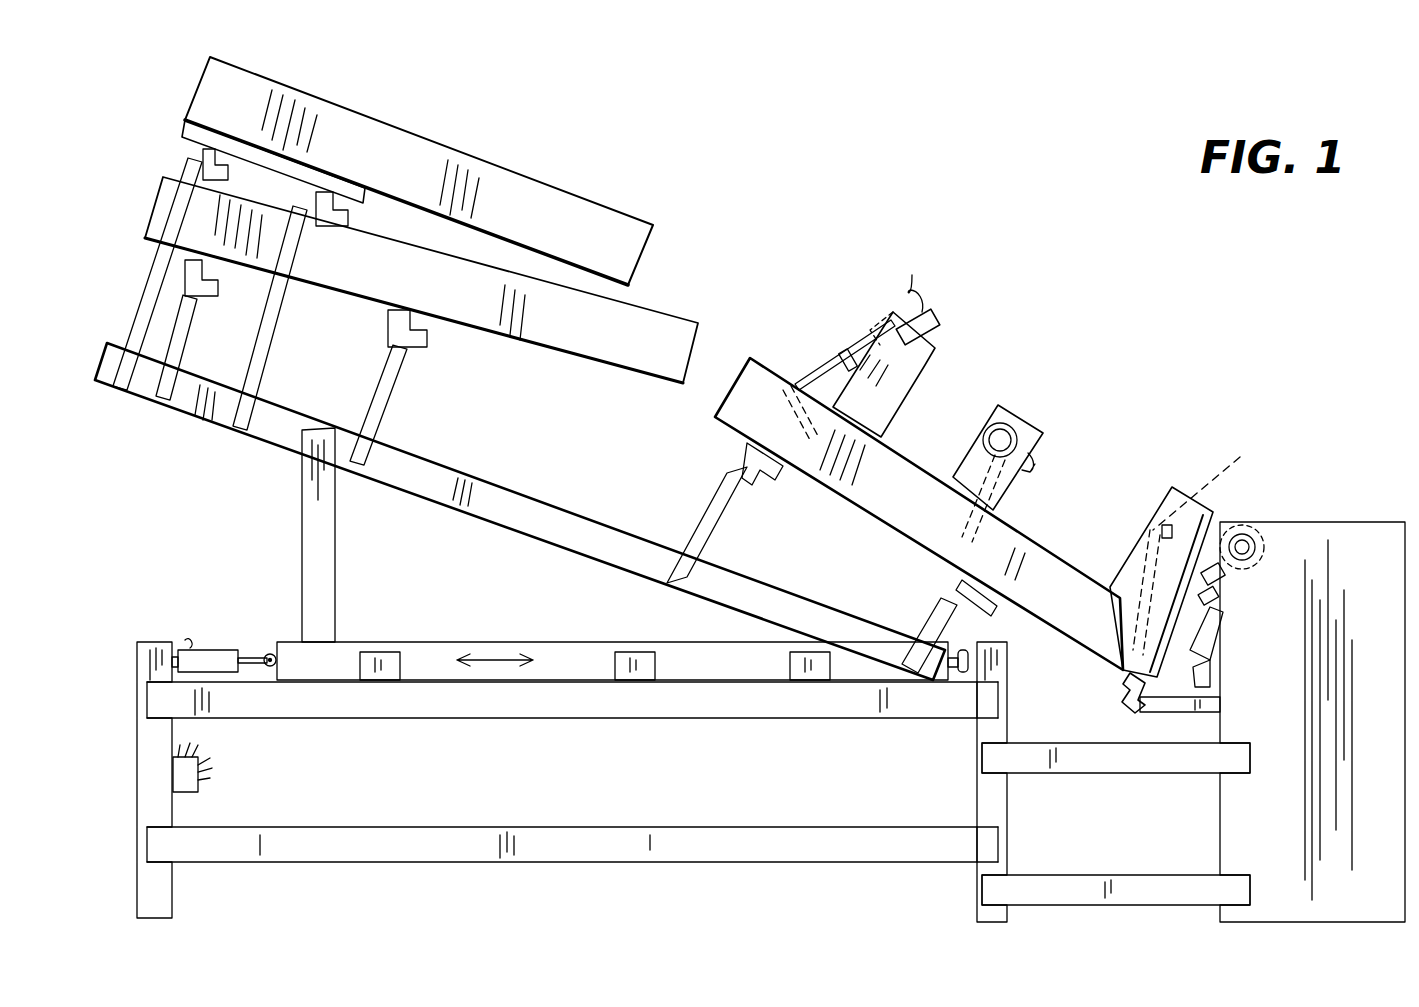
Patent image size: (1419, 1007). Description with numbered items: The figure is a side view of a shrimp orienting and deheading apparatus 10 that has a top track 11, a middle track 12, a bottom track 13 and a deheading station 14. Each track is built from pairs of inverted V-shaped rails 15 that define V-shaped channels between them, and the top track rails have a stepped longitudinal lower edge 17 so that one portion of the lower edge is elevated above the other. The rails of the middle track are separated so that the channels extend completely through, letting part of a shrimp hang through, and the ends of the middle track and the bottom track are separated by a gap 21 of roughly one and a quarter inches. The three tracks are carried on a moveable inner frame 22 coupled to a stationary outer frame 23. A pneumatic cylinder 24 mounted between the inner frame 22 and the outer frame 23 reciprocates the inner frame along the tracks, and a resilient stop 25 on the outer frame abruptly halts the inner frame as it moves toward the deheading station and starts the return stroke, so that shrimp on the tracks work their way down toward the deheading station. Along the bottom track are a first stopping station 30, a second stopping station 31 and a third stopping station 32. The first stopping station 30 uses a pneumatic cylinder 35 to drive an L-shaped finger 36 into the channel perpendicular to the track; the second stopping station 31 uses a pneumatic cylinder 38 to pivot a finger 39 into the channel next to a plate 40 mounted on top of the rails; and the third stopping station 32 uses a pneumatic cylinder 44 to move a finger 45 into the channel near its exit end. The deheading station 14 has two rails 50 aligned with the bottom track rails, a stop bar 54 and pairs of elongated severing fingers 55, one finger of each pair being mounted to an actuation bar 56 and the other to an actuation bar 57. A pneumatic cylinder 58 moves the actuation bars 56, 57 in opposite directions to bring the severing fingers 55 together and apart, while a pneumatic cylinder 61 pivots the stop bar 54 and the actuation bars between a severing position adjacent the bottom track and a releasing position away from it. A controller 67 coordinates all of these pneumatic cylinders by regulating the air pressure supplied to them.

The deheading apparatus 10 is at (895, 172).
The top track 11 is at (533, 182).
The middle track 12 is at (678, 317).
The bottom track 13 is at (762, 367).
The deheading station 14 is at (1252, 632).
The inverted V-shaped rails 15 is at (623, 215).
The longitudinal lower edge 17 is at (417, 205).
The gap 21 is at (694, 413).
The inner frame 22 is at (558, 535).
The outer frame 23 is at (160, 643).
The pneumatic cylinder 24 is at (218, 647).
The resilient stop 25 is at (963, 675).
The first stopping station 30 is at (947, 287).
The second stopping station 31 is at (1032, 388).
The third stopping station 32 is at (1175, 459).
The pneumatic cylinder 35 is at (937, 320).
The L-shaped finger 36 is at (830, 370).
The pneumatic cylinder 38 is at (993, 420).
The finger 39 is at (967, 447).
The plate 40 is at (933, 470).
The pneumatic cylinder 44 is at (1214, 485).
The finger 45 is at (1117, 567).
The rails 50 is at (1130, 683).
The stop bar 54 is at (1210, 668).
The severing fingers 55 is at (1177, 663).
The actuation bar 56 is at (1225, 580).
The actuation bar 57 is at (1217, 600).
The pneumatic cylinder 58 is at (1262, 550).
The pneumatic cylinder 61 is at (1250, 537).
The controller 67 is at (198, 790).